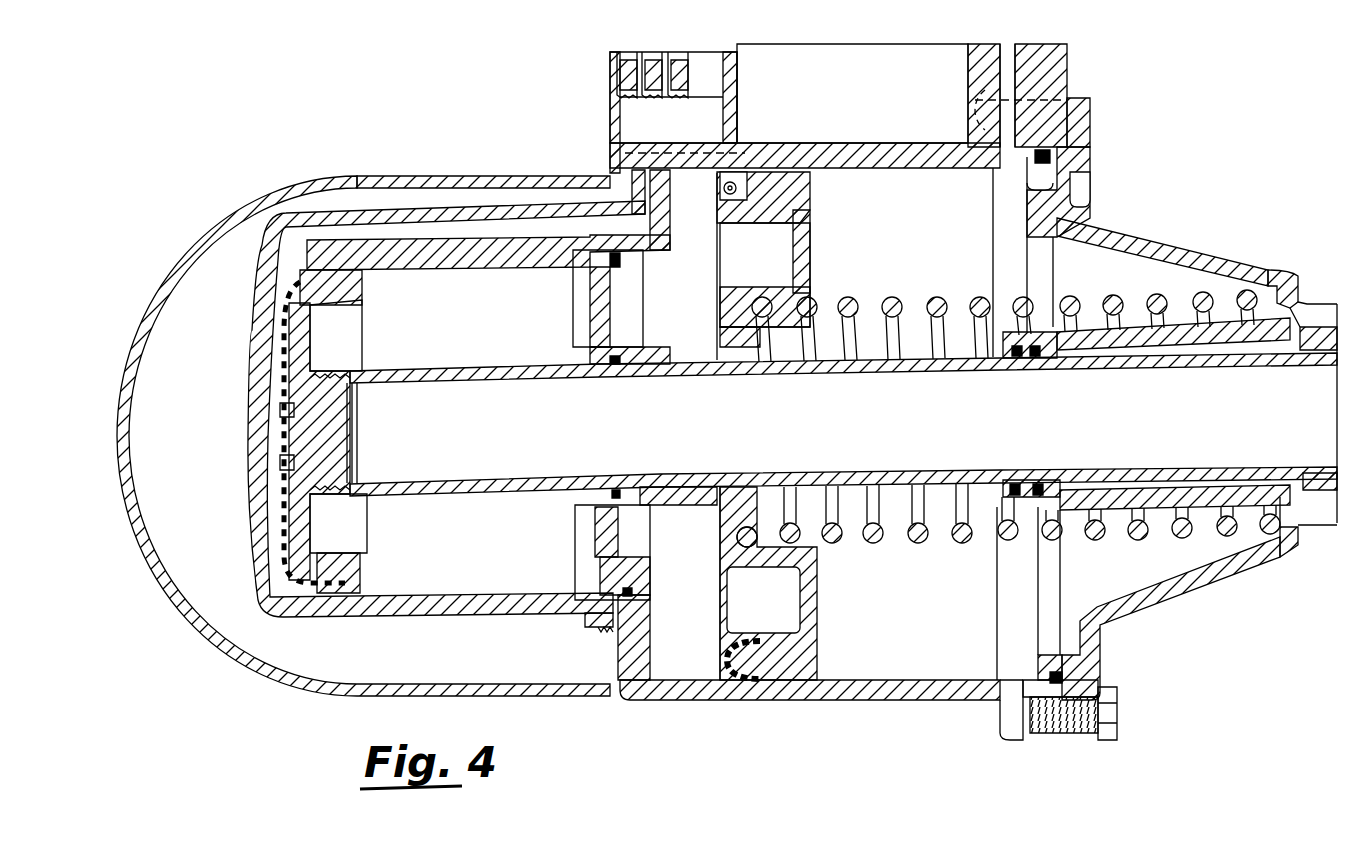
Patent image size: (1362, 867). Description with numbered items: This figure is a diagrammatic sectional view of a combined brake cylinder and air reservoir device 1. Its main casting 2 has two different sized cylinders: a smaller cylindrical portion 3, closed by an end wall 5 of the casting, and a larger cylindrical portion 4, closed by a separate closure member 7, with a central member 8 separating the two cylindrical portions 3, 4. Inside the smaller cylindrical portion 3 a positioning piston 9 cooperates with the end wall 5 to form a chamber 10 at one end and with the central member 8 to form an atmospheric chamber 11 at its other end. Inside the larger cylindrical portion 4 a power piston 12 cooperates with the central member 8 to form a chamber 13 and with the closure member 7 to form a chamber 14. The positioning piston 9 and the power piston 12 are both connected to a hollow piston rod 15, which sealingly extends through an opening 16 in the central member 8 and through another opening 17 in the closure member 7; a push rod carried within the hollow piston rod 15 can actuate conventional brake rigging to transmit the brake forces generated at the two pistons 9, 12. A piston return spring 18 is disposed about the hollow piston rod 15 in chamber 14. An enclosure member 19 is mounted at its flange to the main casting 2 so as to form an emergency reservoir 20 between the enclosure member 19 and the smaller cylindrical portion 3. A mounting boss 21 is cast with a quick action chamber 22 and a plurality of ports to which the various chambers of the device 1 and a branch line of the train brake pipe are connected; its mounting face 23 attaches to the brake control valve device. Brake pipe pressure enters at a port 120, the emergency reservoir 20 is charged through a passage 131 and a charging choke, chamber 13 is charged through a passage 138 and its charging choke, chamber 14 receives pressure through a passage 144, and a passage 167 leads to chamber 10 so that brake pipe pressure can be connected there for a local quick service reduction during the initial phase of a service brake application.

The combined brake cylinder and air reservoir device 1 is at (1175, 230).
The main casting 2 is at (720, 706).
The smaller cylindrical portion 3 is at (476, 605).
The larger cylindrical portion 4 is at (897, 688).
The end wall 5 is at (280, 559).
The closure member 7 is at (1180, 583).
The central member 8 is at (600, 545).
The positioning piston 9 is at (300, 337).
The chamber 10 is at (300, 588).
The atmospheric chamber 11 is at (467, 510).
The power piston 12 is at (795, 660).
The chamber 13 is at (674, 650).
The chamber 14 is at (945, 645).
The hollow piston rod 15 is at (466, 372).
The opening 16 is at (672, 368).
The opening 17 is at (1033, 480).
The piston return spring 18 is at (1140, 531).
The enclosure member 19 is at (245, 233).
The emergency reservoir 20 is at (207, 290).
The mounting boss 21 is at (1062, 68).
The quick action chamber 22 is at (880, 62).
The mounting face 23 is at (1035, 48).
The port 120 is at (710, 57).
The passage 131 is at (628, 60).
The passage 138 is at (680, 60).
The passage 144 is at (1007, 55).
The passage 167 is at (652, 60).